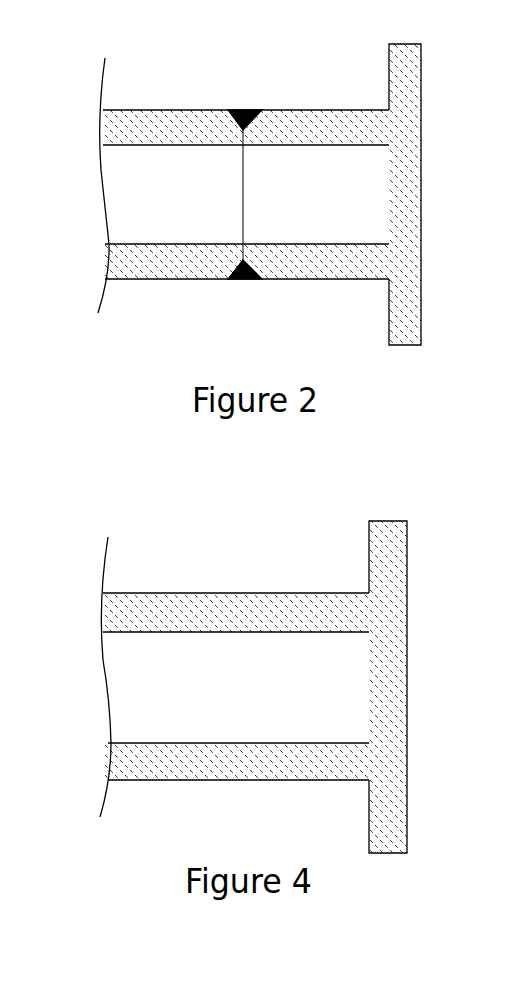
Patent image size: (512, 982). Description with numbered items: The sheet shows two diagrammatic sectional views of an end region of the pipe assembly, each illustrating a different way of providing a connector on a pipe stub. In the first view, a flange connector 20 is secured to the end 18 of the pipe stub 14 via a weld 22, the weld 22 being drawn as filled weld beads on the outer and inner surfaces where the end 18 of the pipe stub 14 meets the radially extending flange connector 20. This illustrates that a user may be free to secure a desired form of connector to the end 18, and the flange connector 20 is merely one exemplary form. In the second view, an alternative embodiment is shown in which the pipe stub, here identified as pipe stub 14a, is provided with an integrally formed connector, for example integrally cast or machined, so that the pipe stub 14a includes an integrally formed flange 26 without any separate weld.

In FIG. 2, the pipe stub 14 is at (160, 120).
In FIG. 2, the end of the pipe stub 18 is at (250, 128).
In FIG. 2, the flange connector 20 is at (333, 123).
In FIG. 2, the weld 22 is at (243, 282).
In FIG. 4, the pipe stub 14a is at (190, 593).
In FIG. 4, the integrally formed flange 26 is at (392, 540).